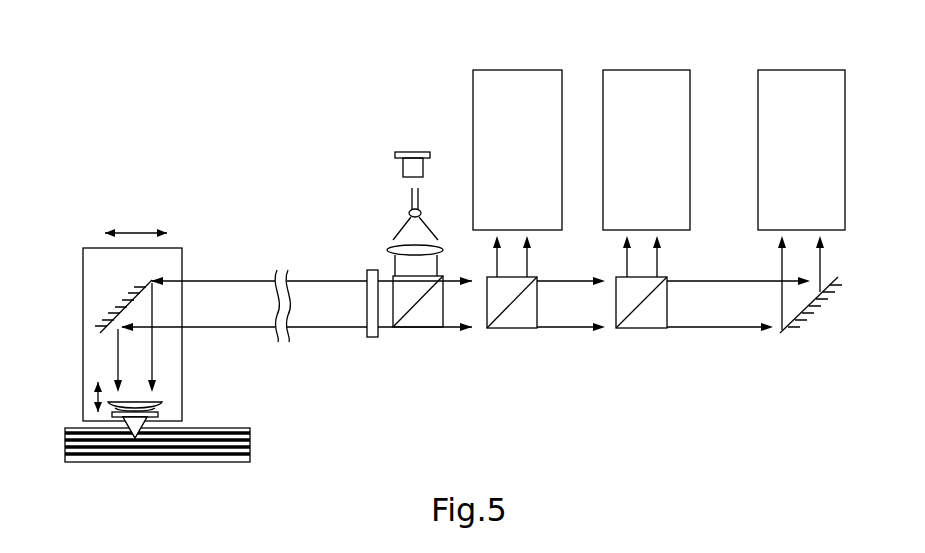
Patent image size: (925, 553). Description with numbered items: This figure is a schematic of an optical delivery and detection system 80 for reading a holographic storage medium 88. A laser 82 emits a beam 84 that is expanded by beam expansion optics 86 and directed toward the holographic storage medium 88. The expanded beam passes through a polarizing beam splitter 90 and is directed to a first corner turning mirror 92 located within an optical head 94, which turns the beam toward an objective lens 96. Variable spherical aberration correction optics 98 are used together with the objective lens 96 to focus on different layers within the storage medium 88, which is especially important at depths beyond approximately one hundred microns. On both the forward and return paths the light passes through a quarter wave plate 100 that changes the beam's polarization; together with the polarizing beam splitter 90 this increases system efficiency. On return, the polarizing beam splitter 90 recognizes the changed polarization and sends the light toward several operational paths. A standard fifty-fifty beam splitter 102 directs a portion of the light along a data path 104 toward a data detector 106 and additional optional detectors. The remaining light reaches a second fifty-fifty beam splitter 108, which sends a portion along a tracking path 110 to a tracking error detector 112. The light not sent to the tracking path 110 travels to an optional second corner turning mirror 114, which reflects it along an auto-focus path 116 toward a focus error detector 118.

The optical delivery and detection system 80 is at (306, 170).
The laser 82 is at (417, 152).
The beam 84 is at (409, 200).
The beam expansion optics 86 is at (409, 216).
The holographic storage medium 88 is at (252, 447).
The polarizing beam splitter 90 is at (427, 318).
The first corner turning mirror 92 is at (108, 313).
The optical head 94 is at (163, 265).
The objective lens 96 is at (163, 402).
The variable spherical aberration correction (SAC) optics 98 is at (170, 412).
The quarter wave plate 100 is at (373, 337).
The standard 50/50 beam splitter 102 is at (513, 323).
The data path 104 is at (513, 257).
The data detector 106 is at (492, 82).
The second 50/50 beam splitter 108 is at (642, 322).
The tracking path 110 is at (642, 255).
The tracking error detector 112 is at (622, 83).
The second corner turning mirror 114 is at (820, 305).
The auto-focus path 116 is at (807, 260).
The focus error detector 118 is at (777, 82).